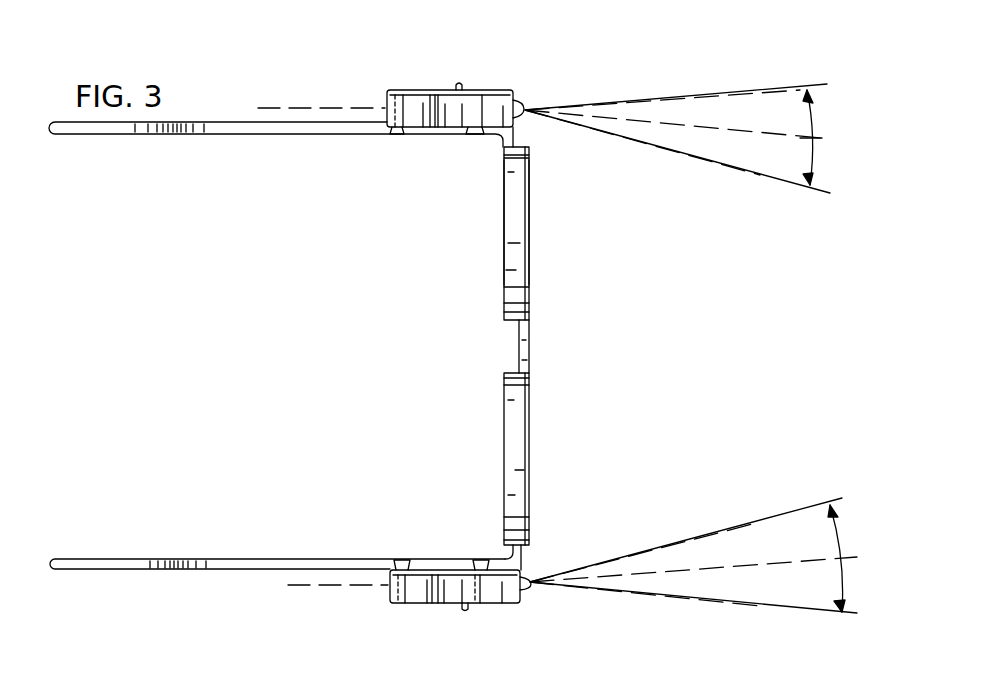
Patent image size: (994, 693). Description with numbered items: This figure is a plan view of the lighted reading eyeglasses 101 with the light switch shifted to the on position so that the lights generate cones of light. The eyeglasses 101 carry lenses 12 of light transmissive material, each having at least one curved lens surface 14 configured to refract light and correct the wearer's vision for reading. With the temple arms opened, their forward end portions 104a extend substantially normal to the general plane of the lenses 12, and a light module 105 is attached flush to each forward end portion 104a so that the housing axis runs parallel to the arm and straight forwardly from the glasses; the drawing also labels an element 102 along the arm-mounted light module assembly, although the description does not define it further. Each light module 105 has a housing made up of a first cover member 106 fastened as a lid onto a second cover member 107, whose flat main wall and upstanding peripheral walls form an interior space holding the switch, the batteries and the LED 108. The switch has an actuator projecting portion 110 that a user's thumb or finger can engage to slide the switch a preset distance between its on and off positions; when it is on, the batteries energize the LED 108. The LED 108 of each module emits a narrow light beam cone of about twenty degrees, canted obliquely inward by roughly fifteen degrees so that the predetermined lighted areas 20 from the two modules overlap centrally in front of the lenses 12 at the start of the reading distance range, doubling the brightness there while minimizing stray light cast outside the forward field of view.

The lenses 12 is at (529, 176).
The lens surface 14 is at (529, 288).
The predetermined lighted area 20 is at (803, 152).
The eyeglasses 101 is at (262, 572).
The cylinder body 102 is at (529, 238).
The forward end portion of temple arm 104a is at (433, 560).
The light module 105 is at (384, 594).
The first cover member 106 is at (418, 90).
The second cover member 107 is at (397, 90).
The LED 108 is at (525, 104).
The actuator projecting portion 110 is at (459, 81).